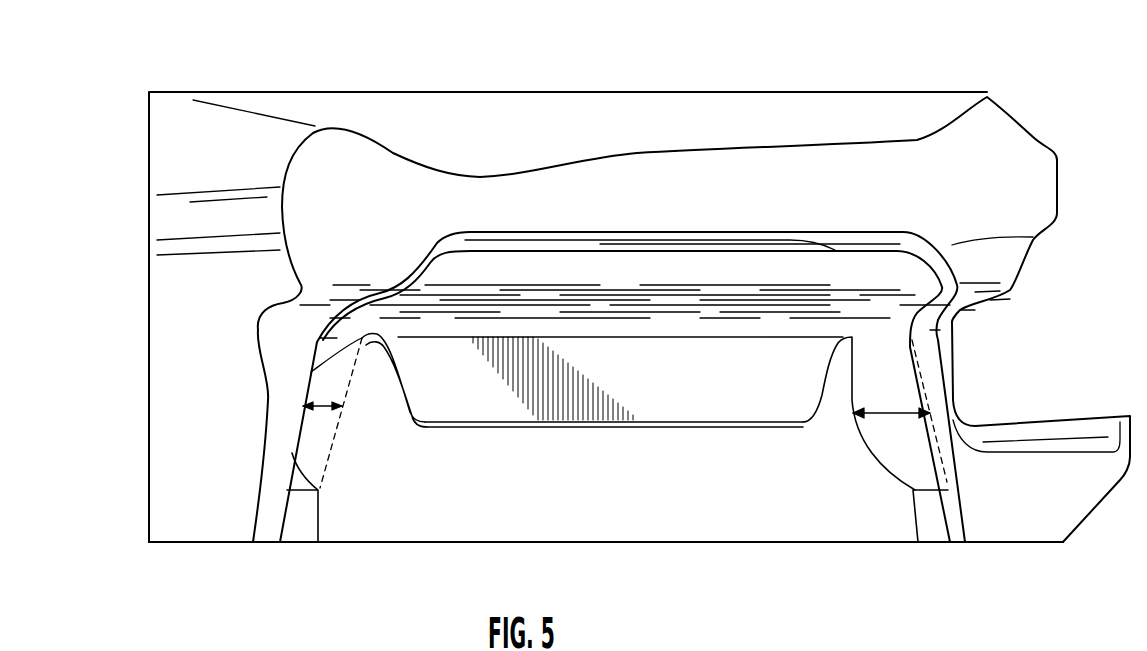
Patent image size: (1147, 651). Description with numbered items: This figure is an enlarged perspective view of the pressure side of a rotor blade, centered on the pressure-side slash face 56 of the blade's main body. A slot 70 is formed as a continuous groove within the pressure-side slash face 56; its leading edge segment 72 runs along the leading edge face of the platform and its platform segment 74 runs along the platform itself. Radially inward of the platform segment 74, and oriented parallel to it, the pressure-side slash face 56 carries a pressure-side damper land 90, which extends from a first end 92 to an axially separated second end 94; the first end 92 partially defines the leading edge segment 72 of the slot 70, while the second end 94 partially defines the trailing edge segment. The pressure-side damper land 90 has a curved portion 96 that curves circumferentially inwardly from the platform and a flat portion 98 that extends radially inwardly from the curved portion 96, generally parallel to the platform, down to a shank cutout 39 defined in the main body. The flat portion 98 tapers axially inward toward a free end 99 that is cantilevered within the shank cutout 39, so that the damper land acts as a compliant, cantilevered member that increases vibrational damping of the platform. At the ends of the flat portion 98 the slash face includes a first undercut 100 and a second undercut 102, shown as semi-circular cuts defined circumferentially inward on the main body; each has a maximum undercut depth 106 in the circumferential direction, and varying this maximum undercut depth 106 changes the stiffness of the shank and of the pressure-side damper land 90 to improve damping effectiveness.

The shank cutout 39 is at (793, 490).
The pressure-side slash face 56 is at (1033, 237).
The slot 70 is at (437, 242).
The leading edge segment 72 is at (267, 528).
The platform segment 74 is at (603, 236).
The pressure-side damper land 90 is at (572, 305).
The first end 92 is at (340, 317).
The second end 94 is at (923, 310).
The curved portion 96 is at (720, 303).
The flat portion 98 is at (473, 408).
The free end 99 is at (653, 420).
The first undercut 100 is at (297, 482).
The second undercut 102 is at (937, 490).
The maximum undercut depth 106 is at (322, 406).